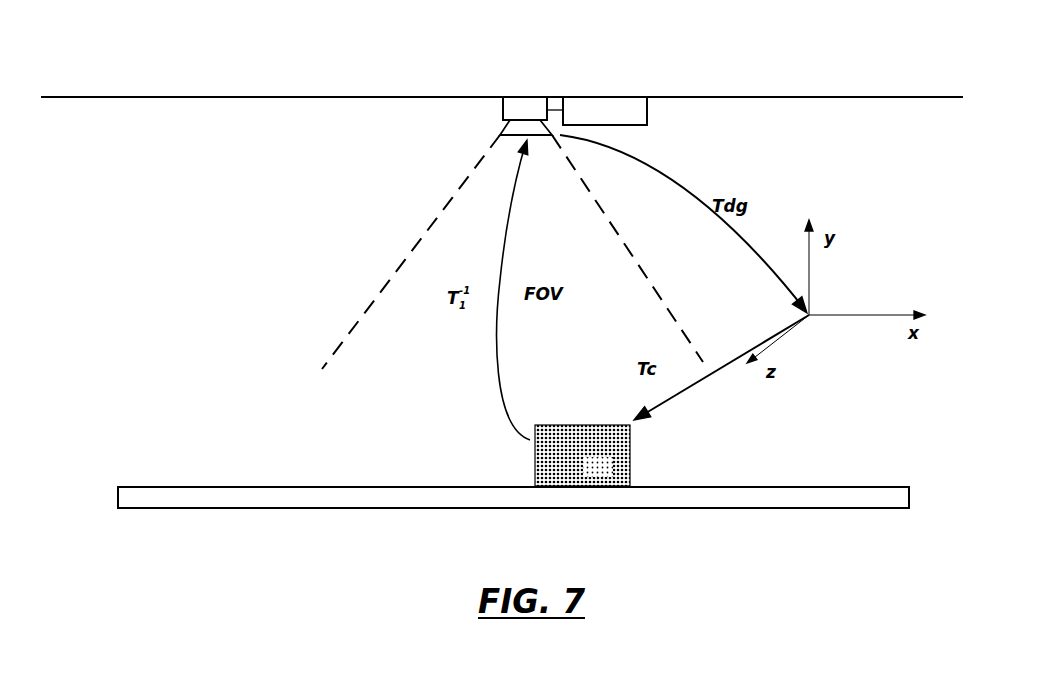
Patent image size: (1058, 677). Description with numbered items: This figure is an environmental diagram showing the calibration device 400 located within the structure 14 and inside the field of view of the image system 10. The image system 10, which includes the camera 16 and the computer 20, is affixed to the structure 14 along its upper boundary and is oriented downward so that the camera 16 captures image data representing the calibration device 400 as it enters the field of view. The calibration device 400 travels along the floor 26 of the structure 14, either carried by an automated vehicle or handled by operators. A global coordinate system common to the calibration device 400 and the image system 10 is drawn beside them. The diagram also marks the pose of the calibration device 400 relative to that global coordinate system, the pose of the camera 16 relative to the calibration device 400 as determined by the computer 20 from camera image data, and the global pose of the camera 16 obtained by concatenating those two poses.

The image system 10 is at (518, 86).
The structure 14 is at (359, 93).
The camera 16 is at (501, 108).
The computer 20 is at (633, 120).
The floor 26 is at (648, 492).
The calibration device 400 is at (563, 417).